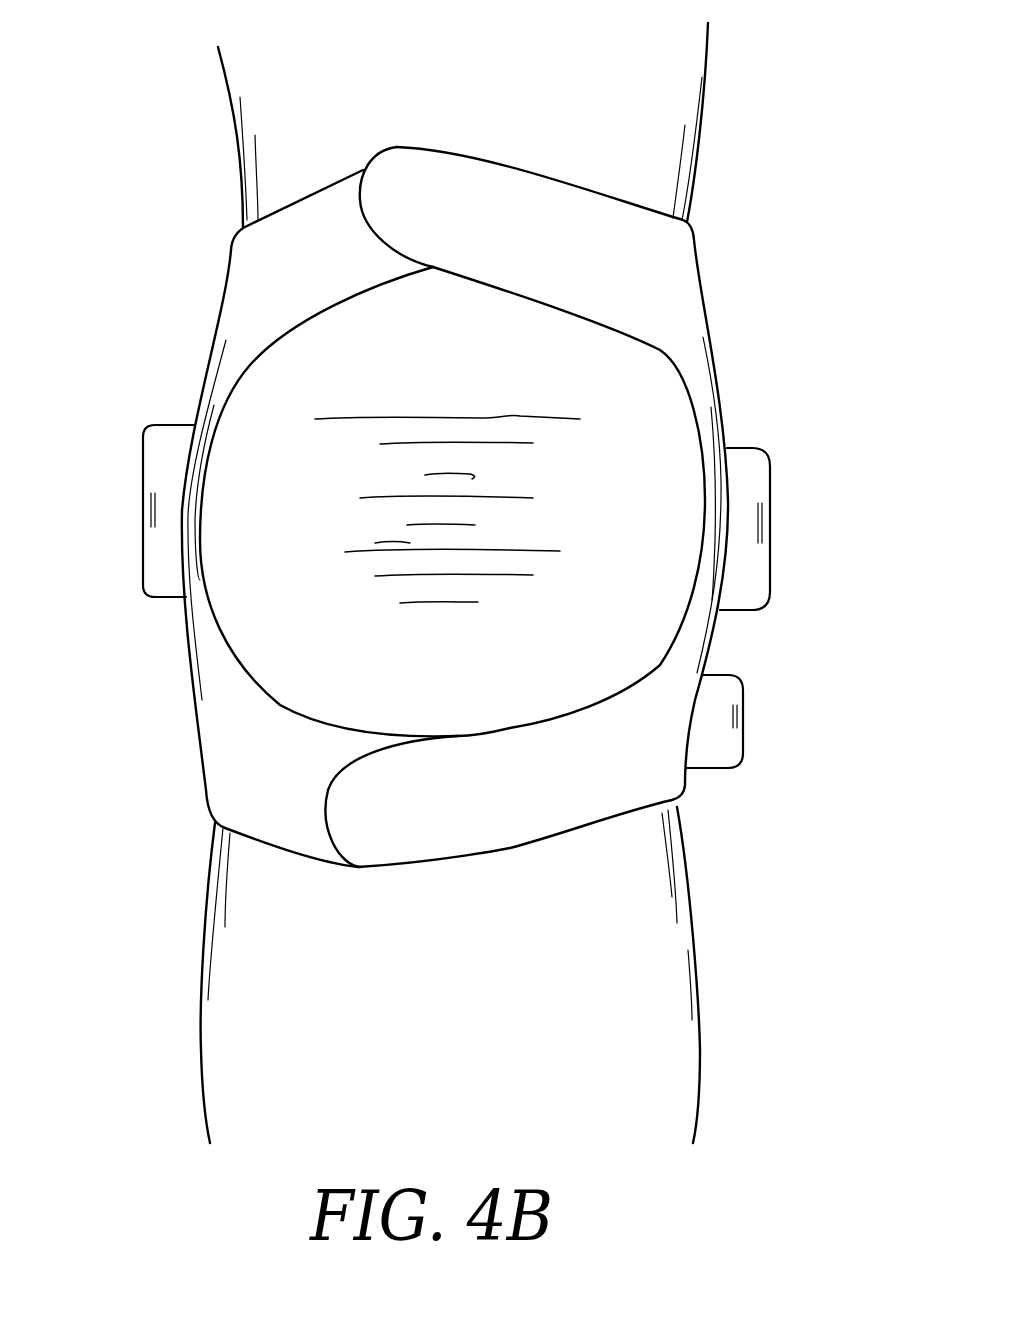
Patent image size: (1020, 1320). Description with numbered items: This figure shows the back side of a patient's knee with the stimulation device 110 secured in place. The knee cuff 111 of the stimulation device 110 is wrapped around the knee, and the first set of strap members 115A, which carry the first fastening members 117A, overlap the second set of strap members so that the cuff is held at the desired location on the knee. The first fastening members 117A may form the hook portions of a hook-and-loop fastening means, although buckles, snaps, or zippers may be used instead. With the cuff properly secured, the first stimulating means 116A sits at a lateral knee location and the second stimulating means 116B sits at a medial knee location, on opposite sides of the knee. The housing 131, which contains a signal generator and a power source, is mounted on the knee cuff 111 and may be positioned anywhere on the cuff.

The stimulation device 110 is at (828, 64).
The knee cuff 111 is at (705, 312).
The first set of strap members 115A is at (469, 167).
The first stimulating means 116A is at (770, 527).
The second stimulating means 116B is at (145, 505).
The first fastening members 117A is at (322, 297).
The housing 131 is at (743, 720).